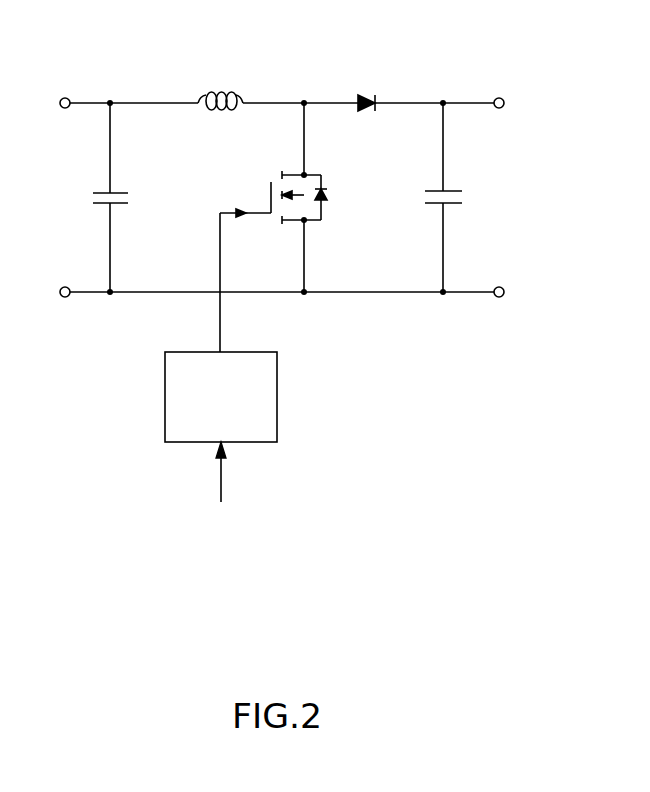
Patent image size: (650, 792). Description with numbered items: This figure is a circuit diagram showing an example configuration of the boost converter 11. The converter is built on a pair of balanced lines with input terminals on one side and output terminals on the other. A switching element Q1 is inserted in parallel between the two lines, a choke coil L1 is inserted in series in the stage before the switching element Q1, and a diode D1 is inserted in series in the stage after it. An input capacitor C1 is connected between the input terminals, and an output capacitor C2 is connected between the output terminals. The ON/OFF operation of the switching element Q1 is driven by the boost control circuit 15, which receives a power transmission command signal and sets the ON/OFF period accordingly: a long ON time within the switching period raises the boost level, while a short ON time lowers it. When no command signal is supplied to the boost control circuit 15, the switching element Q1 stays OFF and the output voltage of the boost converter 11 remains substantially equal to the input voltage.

The boost converter 11 is at (410, 35).
The boost control circuit 15 is at (277, 430).
The choke coil L1 is at (220, 83).
The diode D1 is at (366, 83).
The input capacitor C1 is at (106, 197).
The output capacitor C2 is at (439, 197).
The switching element Q1 is at (313, 200).